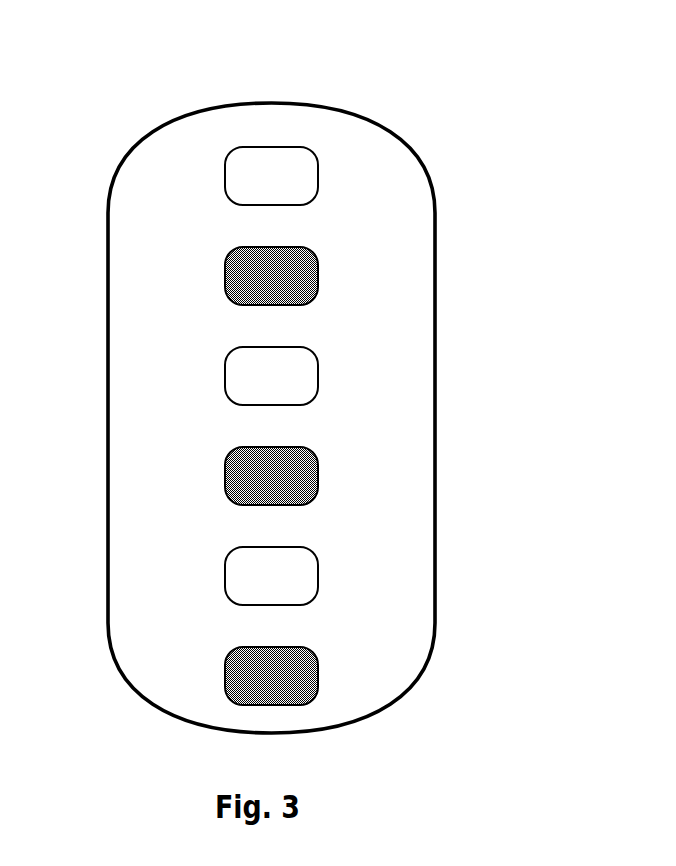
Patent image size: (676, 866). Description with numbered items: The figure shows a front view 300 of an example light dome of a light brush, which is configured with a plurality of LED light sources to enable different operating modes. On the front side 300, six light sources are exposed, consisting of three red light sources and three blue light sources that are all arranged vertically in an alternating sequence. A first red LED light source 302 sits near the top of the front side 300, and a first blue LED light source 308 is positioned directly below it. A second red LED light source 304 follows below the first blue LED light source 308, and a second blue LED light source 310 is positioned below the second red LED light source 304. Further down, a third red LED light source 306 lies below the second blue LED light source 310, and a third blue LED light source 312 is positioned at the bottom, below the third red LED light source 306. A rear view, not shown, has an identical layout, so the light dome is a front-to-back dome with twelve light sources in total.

The front view 300 is at (433, 148).
The first red LED light source 302 is at (229, 153).
The second red LED light source 304 is at (229, 353).
The third red LED light source 306 is at (229, 553).
The first blue LED light source 308 is at (229, 253).
The second blue LED light source 310 is at (229, 453).
The third blue LED light source 312 is at (229, 653).